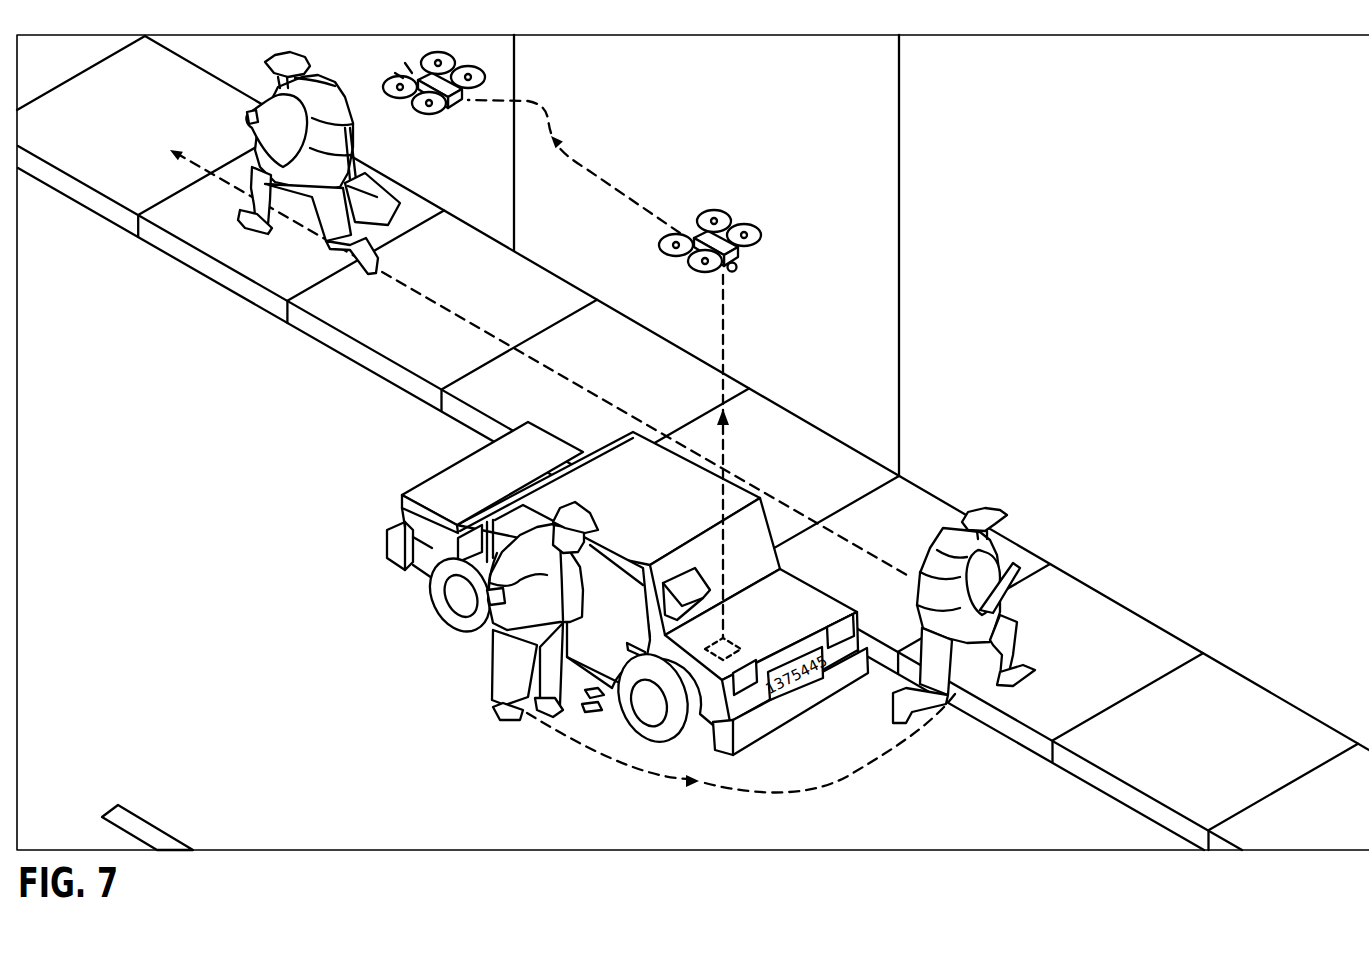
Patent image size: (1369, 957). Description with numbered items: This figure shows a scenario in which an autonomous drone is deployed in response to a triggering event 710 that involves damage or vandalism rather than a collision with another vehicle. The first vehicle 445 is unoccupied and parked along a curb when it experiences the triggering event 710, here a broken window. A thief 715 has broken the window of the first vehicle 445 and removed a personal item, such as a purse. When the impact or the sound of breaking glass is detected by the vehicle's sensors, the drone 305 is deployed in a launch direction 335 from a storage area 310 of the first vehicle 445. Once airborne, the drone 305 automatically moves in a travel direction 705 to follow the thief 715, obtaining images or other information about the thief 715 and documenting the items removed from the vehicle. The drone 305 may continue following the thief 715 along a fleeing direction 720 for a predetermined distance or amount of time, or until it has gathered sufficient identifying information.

The drone 305 is at (446, 133).
The storage area 310 is at (742, 648).
The launch direction 335 is at (731, 346).
The first vehicle 445 is at (452, 485).
The travel direction 705 is at (576, 167).
The triggering event 710 is at (238, 533).
The thief 715 is at (240, 218).
The fleeing direction 720 is at (452, 312).